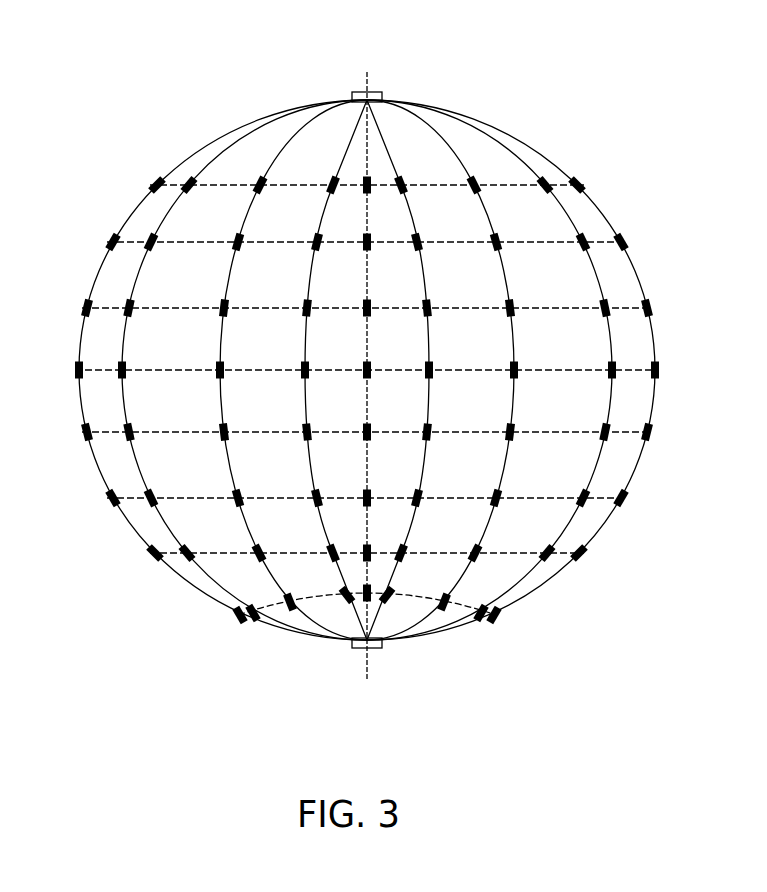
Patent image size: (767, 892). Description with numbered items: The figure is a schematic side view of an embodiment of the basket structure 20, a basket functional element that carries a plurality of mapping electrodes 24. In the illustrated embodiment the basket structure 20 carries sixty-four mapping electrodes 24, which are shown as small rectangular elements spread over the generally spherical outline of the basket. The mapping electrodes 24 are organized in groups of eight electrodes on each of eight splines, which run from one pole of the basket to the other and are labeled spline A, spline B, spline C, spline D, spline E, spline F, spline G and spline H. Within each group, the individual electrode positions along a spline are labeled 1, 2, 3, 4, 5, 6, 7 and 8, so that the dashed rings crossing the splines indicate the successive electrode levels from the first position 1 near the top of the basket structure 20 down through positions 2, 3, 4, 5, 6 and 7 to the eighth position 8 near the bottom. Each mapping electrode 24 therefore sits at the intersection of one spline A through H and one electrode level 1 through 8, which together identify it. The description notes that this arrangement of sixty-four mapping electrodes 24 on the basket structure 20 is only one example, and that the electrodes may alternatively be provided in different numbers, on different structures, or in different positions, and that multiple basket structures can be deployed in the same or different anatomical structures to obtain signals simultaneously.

The basket structure 20 is at (183, 64).
The mapping electrodes 24 is at (627, 242).
The first electrode position 1 is at (153, 183).
The second electrode position 2 is at (112, 241).
The third electrode position 3 is at (88, 308).
The fourth electrode position 4 is at (80, 370).
The fifth electrode position 5 is at (88, 432).
The sixth electrode position 6 is at (112, 498).
The seventh electrode position 7 is at (153, 555).
The eighth electrode position 8 is at (244, 617).
The spline A is at (378, 121).
The spline B is at (434, 128).
The spline C is at (495, 138).
The spline D is at (551, 160).
The spline E is at (356, 121).
The spline F is at (300, 108).
The spline G is at (247, 132).
The spline H is at (273, 160).